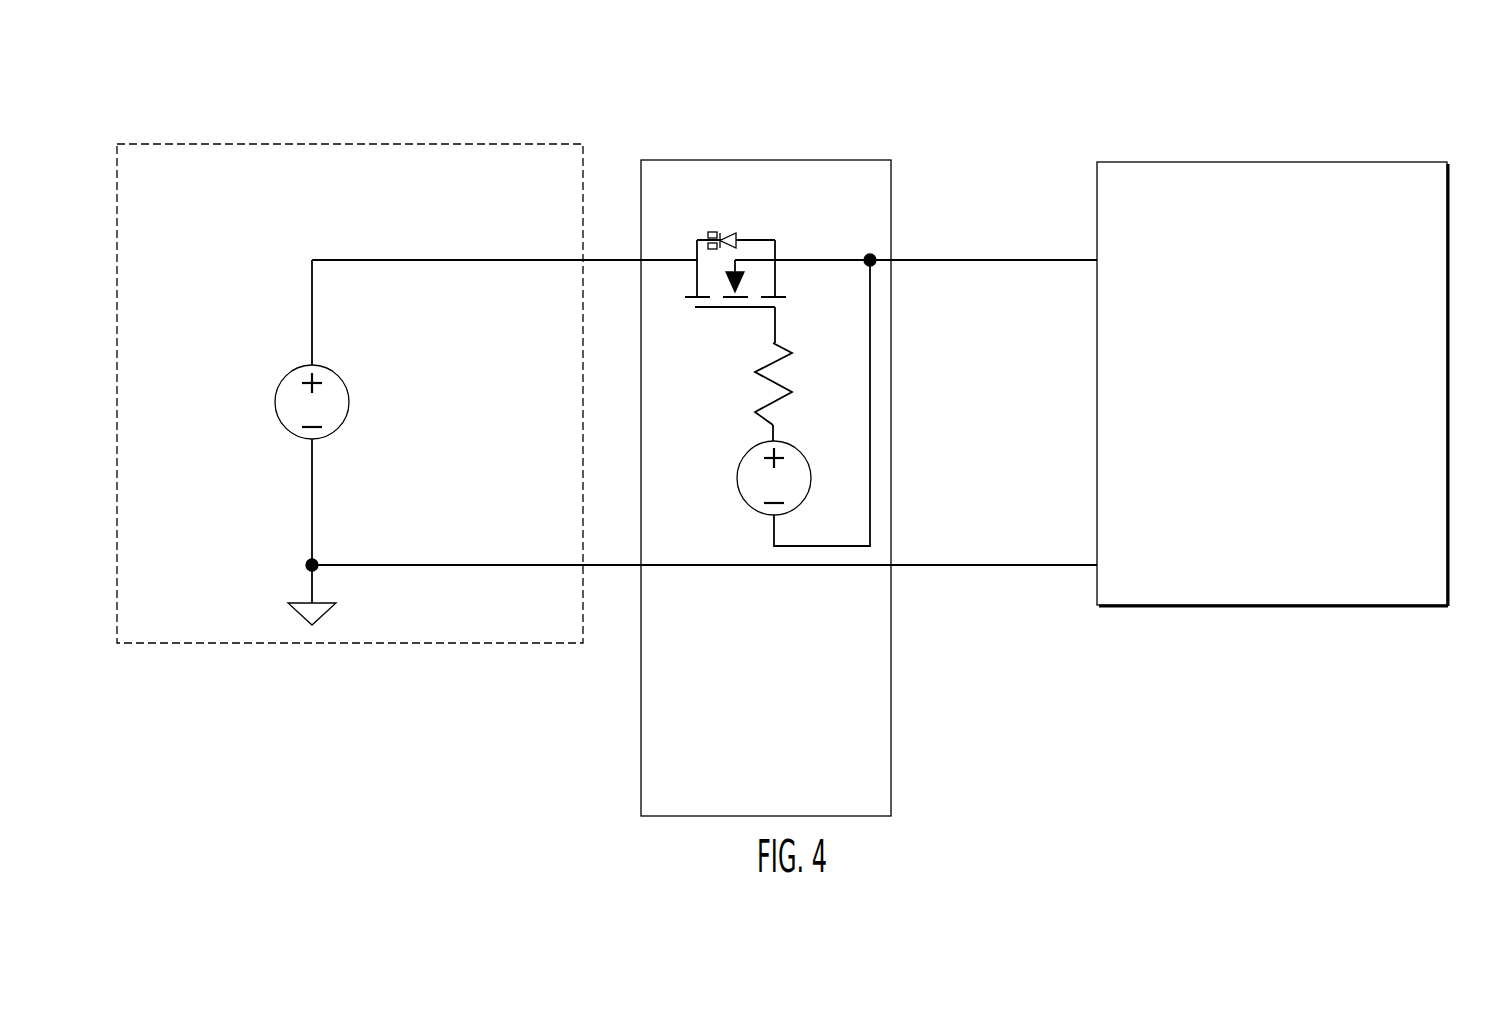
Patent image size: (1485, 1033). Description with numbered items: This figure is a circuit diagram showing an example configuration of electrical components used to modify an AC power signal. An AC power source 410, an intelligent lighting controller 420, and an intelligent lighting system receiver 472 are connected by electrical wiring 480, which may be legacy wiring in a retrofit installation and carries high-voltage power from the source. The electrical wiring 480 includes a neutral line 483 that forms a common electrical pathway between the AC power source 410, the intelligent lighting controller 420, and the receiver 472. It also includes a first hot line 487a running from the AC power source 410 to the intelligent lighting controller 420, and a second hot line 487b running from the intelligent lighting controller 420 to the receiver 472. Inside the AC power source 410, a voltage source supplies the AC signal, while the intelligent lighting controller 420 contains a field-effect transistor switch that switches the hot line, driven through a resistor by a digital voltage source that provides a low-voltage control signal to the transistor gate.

The AC power source 410 is at (350, 393).
The intelligent lighting controller 420 is at (846, 757).
The intelligent lighting system receiver 472 is at (1380, 413).
The electrical wiring 480 is at (923, 565).
The neutral line 483 is at (1020, 565).
The hot line 487a is at (402, 233).
The hot line 487b is at (1032, 235).